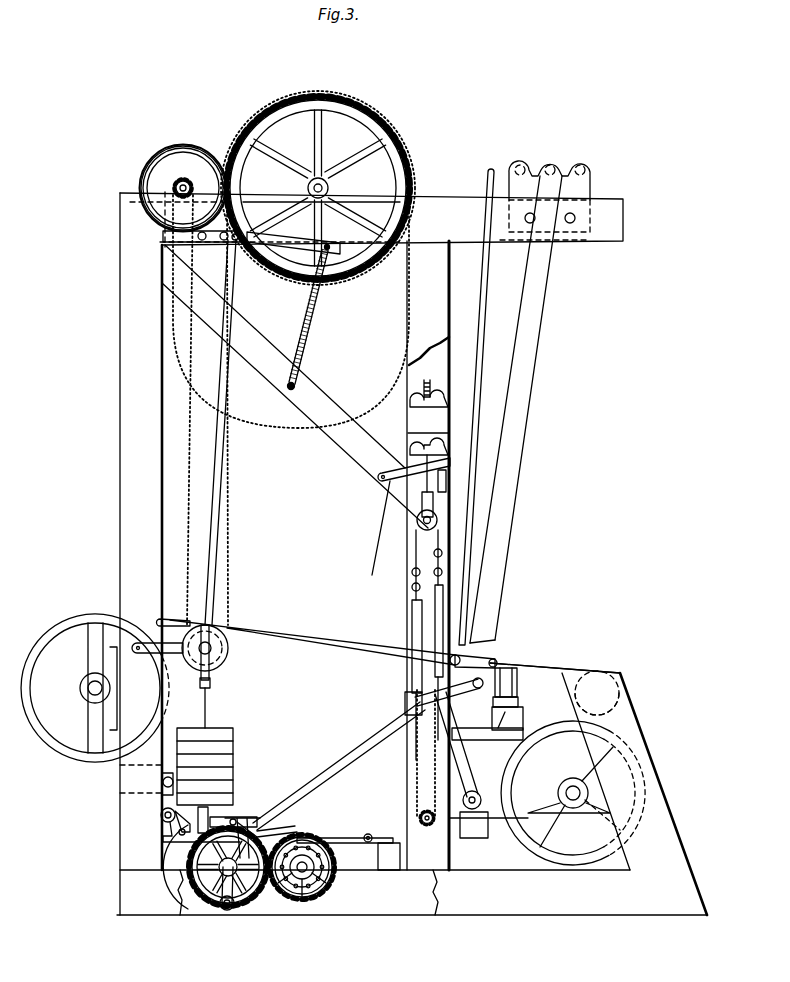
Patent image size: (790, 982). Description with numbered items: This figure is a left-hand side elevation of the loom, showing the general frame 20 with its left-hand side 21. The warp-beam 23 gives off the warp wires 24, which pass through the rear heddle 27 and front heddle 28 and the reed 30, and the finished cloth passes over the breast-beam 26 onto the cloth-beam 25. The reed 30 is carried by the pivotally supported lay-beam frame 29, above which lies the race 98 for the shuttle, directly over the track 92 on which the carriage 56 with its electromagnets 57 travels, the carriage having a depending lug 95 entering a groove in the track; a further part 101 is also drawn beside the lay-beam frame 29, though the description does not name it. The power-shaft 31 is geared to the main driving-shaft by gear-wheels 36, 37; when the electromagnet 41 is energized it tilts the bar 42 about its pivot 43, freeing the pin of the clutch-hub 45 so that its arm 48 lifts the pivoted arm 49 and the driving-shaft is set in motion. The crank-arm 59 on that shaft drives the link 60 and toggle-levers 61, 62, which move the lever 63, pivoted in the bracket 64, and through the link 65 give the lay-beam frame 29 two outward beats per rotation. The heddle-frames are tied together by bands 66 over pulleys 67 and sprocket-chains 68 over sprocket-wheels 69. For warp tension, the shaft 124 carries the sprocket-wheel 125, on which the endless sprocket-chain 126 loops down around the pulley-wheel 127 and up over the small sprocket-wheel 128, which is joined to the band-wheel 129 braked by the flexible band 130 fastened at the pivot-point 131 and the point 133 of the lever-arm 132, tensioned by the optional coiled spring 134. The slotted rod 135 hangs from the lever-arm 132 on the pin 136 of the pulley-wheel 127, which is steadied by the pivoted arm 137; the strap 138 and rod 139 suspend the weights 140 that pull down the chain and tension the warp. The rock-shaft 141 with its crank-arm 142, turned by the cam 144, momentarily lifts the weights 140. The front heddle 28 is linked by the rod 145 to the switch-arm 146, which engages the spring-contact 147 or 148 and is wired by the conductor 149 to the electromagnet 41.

The general frame 20 is at (156, 553).
The left-hand side of frame 21 is at (412, 554).
The warp-beam 23 is at (72, 625).
The warp wires or threads 24 is at (312, 646).
The cloth-beam 25 is at (505, 785).
The breast-beam 26 is at (622, 694).
The rear heddle 27 is at (450, 665).
The front heddle 28 is at (490, 626).
The lay-beam frame 29 is at (530, 402).
The reed 30 is at (480, 658).
The power-shaft 31 is at (303, 873).
The gear-wheel 36 is at (325, 893).
The gear-wheel 37 is at (205, 885).
The electromagnet 41 is at (390, 870).
The bar 42 is at (345, 838).
The pivot 43 is at (370, 834).
The clutch-hub 45 is at (298, 890).
The arm 48 is at (300, 832).
The pivoted arm 49 is at (265, 820).
The carriage 56 is at (519, 700).
The electromagnets 57 is at (518, 685).
The crank-arm 59 is at (222, 900).
The link 60 is at (240, 905).
The toggle-lever 61 is at (235, 815).
The toggle-lever 62 is at (335, 776).
The lever 63 is at (459, 744).
The bracket 64 is at (478, 804).
The link 65 is at (444, 696).
The bands 66 is at (412, 560).
The pulleys 67 is at (450, 535).
The sprocket-chains 68 is at (416, 790).
The sprocket-wheels 69 is at (426, 828).
The track 92 is at (524, 717).
The depending lug 95 is at (496, 734).
The race 98 is at (525, 664).
The rod 101 is at (476, 325).
The shaft 124 is at (330, 176).
The sprocket-wheel 125 is at (395, 130).
The sprocket-chain 126 is at (385, 395).
The pulley-wheel 127 is at (229, 654).
The small sprocket-wheel 128 is at (188, 176).
The band-wheel 129 is at (175, 155).
The flexible band 130 is at (215, 155).
The pivot-point 131 is at (165, 238).
The lever-arm 132 is at (290, 237).
The fastening point 133 is at (285, 432).
The coiled spring 134 is at (310, 328).
The rod 135 is at (240, 318).
The pin 136 is at (208, 642).
The pivoted arm 137 is at (155, 656).
The strap 138 is at (212, 682).
The rod 139 is at (206, 714).
The weights 140 is at (234, 744).
The rock-shaft 141 is at (160, 816).
The crank-arm 142 is at (178, 834).
The cam 144 is at (185, 845).
The rod 145 is at (450, 508).
The switch-arm 146 is at (400, 472).
The spring-contact 147 is at (450, 462).
The spring-contact 148 is at (450, 485).
The conductor 149 is at (382, 513).